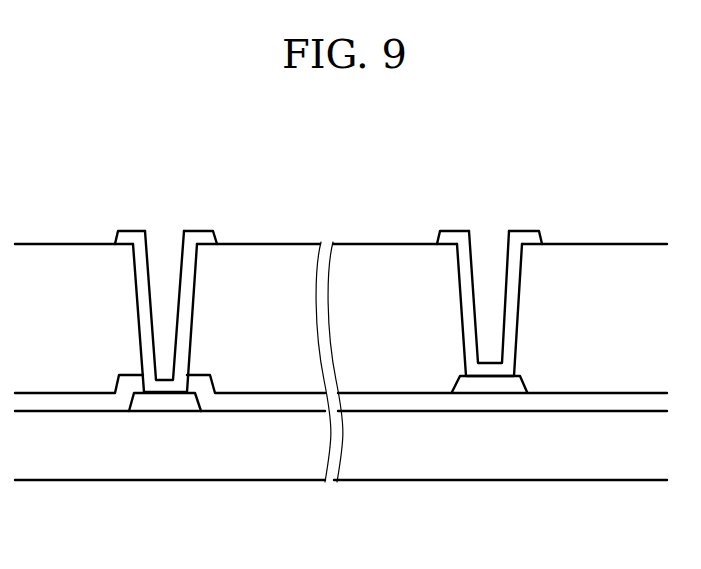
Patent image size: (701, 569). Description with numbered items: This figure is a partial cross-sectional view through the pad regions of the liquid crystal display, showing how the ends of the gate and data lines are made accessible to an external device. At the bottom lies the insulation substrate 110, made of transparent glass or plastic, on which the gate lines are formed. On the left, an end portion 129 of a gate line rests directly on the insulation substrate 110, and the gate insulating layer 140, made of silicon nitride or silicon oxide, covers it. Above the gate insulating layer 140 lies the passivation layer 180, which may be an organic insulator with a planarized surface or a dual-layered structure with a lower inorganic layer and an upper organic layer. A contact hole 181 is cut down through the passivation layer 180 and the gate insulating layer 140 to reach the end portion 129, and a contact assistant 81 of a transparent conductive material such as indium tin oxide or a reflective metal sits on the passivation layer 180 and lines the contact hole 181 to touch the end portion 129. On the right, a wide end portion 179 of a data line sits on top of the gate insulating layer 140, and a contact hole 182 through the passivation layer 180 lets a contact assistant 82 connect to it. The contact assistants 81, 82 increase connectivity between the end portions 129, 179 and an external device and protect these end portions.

The contact assistant 81 is at (128, 233).
The contact hole 181 is at (193, 288).
The contact assistant 82 is at (451, 233).
The contact hole 182 is at (517, 288).
The gate insulating layer 140 is at (72, 400).
The end portion of gate line 129 is at (166, 400).
The passivation layer 180 is at (264, 329).
The end portion of data line 179 is at (492, 383).
The insulation substrate 110 is at (568, 448).